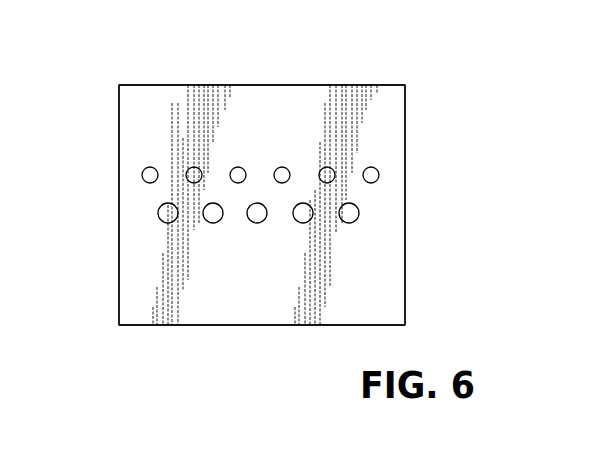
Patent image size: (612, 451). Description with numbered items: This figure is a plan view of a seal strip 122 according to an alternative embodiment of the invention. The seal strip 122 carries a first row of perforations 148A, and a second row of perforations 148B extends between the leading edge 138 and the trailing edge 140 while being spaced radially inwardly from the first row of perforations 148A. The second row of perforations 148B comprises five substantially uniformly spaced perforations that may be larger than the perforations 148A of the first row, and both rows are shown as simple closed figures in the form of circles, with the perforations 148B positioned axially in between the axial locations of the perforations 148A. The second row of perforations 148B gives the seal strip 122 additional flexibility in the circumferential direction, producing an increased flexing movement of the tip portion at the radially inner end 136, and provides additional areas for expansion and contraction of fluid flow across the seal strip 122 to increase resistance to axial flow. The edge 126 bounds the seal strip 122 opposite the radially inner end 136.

The seal strip 122 is at (410, 101).
The top edge 126 is at (172, 84).
The radially inner end 136 is at (262, 326).
The leading edge 138 is at (118, 308).
The trailing edge 140 is at (406, 235).
The first row of perforations 148A is at (239, 167).
The second row of perforations 148B is at (158, 213).